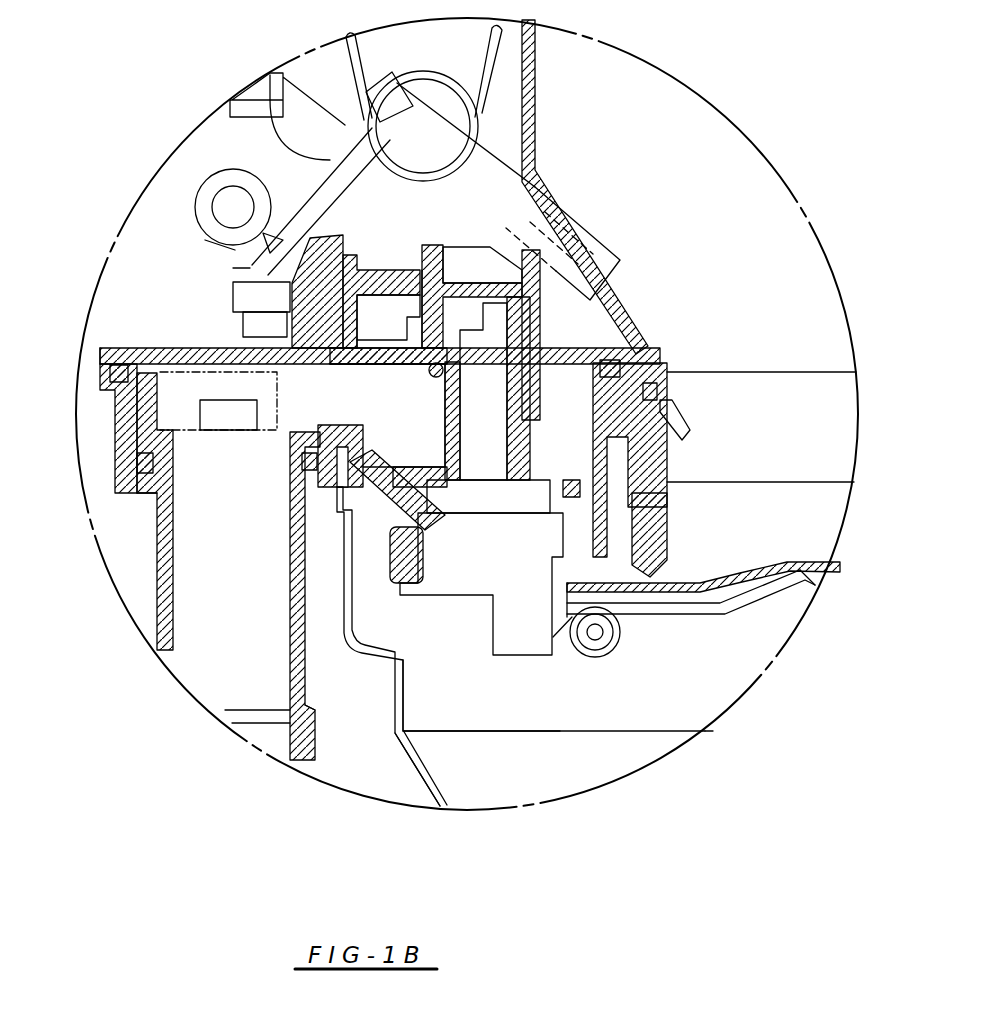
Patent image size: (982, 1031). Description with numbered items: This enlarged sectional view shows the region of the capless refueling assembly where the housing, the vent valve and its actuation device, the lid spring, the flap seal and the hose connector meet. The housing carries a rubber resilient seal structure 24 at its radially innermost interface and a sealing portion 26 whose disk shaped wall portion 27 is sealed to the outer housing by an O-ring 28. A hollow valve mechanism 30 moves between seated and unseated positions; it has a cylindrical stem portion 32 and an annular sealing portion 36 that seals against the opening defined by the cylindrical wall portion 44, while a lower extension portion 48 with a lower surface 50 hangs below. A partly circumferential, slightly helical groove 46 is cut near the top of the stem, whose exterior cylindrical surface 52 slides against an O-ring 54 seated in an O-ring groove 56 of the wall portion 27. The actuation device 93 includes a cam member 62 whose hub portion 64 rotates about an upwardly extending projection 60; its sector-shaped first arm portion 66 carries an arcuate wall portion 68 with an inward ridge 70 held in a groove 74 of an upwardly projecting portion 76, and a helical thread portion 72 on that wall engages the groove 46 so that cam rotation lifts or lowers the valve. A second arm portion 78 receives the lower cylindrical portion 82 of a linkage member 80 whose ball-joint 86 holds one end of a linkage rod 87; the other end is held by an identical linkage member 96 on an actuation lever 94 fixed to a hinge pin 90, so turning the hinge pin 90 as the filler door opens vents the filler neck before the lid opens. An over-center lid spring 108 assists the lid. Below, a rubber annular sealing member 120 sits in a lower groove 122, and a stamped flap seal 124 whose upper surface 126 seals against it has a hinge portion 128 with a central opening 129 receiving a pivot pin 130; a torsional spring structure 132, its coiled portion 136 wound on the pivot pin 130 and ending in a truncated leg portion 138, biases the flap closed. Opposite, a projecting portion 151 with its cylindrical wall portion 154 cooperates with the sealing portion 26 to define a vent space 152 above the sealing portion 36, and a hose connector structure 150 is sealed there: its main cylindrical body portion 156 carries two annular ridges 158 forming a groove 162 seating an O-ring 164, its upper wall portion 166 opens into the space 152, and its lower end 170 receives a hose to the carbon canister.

The resilient seal structure 24 is at (675, 412).
The sealing portion 26 is at (168, 316).
The disk shaped wall portion 27 is at (183, 353).
The O-ring 28 is at (105, 358).
The valve mechanism 30 is at (572, 490).
The stem portion 32 is at (462, 468).
The sealing portion 36 is at (430, 497).
The cylindrical wall portion 44 is at (353, 543).
The groove 46 is at (458, 307).
The lower extension portion 48 is at (482, 583).
The lower surface 50 is at (513, 660).
The exterior cylindrical surface 52 is at (458, 418).
The O-ring 54 is at (442, 395).
The O-ring groove 56 is at (543, 350).
The upwardly extending projection 60 is at (323, 248).
The valve actuating cam member 62 is at (368, 256).
The main hub portion 64 is at (338, 363).
The first arm portion 66 is at (395, 262).
The arcuate wall portion 68 is at (440, 248).
The ridge 70 is at (408, 330).
The thread portion 72 is at (463, 333).
The groove 74 is at (430, 255).
The upwardly extending projecting portion 76 is at (373, 348).
The second arm portion 78 is at (243, 290).
The linkage member 80 is at (245, 270).
The lower cylindrical portion 82 is at (250, 325).
The ball-joint 86 is at (272, 200).
The linkage rod 87 is at (262, 208).
The hinge pin 90 is at (618, 232).
The actuation device 93 is at (203, 138).
The actuation lever 94 is at (265, 100).
The linkage member 96 is at (192, 205).
The lid spring 108 is at (328, 158).
The annular sealing member 120 is at (667, 567).
The lower groove 122 is at (647, 525).
The flap seal 124 is at (787, 562).
The upper surface 126 is at (713, 703).
The hinge portion 128 is at (617, 603).
The central opening 129 is at (593, 633).
The pivot pin 130 is at (563, 637).
The torsional spring structure 132 is at (742, 628).
The coiled portion 136 is at (623, 647).
The truncated leg portion 138 is at (567, 660).
The hose connector structure 150 is at (165, 590).
The projecting portion 151 is at (98, 408).
The space 152 is at (307, 410).
The cylindrical wall portion 154 is at (120, 495).
The main cylindrical body portion 156 is at (303, 620).
The annular ridges 158 is at (310, 443).
The groove 162 is at (300, 460).
The O-ring 164 is at (125, 482).
The upper wall portion 166 is at (160, 397).
The lower end 170 is at (303, 738).